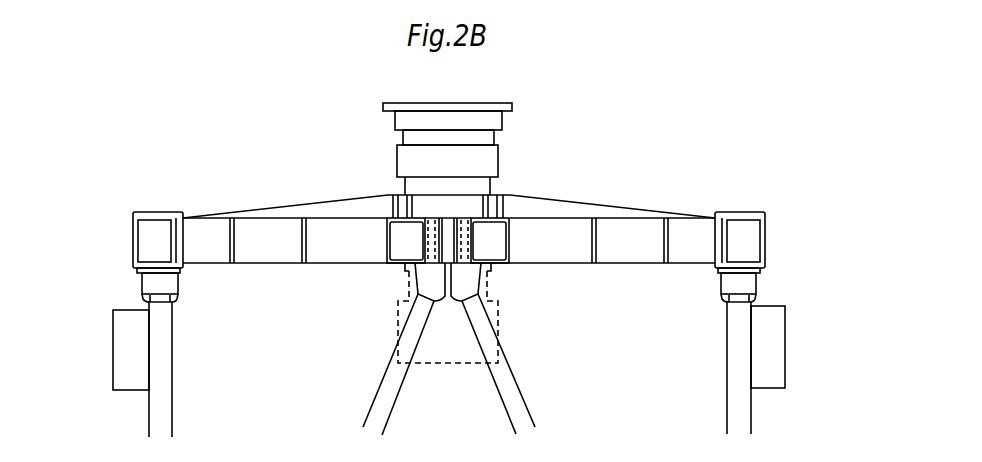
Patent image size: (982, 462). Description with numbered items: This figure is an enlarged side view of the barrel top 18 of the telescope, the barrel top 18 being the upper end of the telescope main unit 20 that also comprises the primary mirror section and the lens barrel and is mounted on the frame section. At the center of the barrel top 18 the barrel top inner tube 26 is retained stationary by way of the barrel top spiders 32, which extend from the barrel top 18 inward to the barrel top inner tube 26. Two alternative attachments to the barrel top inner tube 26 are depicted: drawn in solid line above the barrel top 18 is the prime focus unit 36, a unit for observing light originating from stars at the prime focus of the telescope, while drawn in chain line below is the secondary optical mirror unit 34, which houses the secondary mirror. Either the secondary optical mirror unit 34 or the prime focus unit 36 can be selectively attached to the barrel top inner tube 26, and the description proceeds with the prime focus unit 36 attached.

The barrel top 18 is at (158, 243).
The telescope main unit 20 is at (762, 424).
The barrel top inner tube 26 is at (391, 197).
The barrel top spiders 32 is at (601, 201).
The secondary optical mirror unit 34 is at (500, 325).
The prime focus unit 36 is at (503, 118).